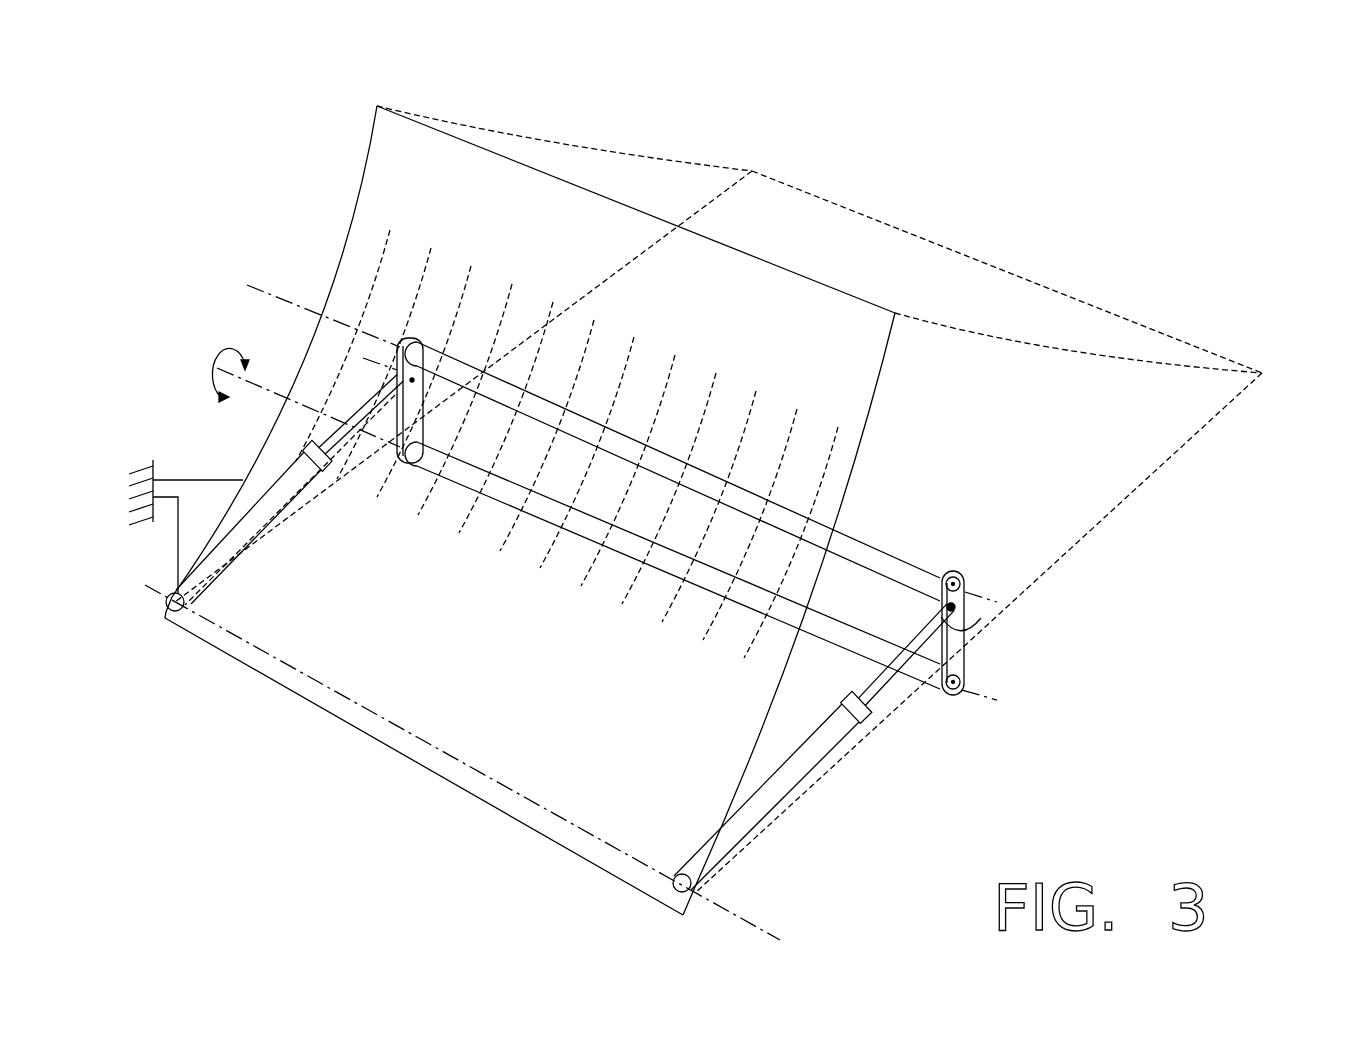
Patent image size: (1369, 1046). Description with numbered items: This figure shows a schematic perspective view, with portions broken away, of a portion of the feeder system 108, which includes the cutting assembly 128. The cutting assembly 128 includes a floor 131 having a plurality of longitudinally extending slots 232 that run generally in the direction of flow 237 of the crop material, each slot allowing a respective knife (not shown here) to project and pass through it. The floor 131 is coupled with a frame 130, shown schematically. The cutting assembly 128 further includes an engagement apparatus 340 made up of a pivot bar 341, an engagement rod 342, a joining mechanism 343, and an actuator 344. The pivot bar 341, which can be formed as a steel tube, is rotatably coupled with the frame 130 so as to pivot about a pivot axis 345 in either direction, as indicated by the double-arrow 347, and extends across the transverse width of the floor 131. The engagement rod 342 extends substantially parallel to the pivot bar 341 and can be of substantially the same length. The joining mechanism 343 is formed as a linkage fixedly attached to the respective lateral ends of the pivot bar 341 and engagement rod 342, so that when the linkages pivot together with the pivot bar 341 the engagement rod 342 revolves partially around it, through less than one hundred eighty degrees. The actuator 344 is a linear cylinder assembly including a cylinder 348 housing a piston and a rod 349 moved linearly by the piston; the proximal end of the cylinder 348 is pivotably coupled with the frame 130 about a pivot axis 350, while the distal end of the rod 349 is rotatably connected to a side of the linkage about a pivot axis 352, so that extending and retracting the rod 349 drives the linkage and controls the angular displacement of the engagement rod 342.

The feeder system 108 is at (1056, 138).
The cutting assembly 128 is at (1257, 326).
The floor 131 is at (363, 177).
The slots 232 is at (380, 270).
The frame 130 is at (152, 461).
The direction of flow 237 is at (358, 782).
The engagement apparatus 340 is at (781, 573).
The pivot bar 341 is at (913, 680).
The engagement rod 342 is at (938, 564).
The joining mechanism 343 is at (957, 652).
The actuator 344 is at (597, 632).
The pivot axis 345 is at (259, 390).
The double-arrow 347 is at (216, 365).
The cylinder 348 is at (828, 755).
The rod 349 is at (876, 695).
The pivot axis 350 is at (752, 920).
The pivot axis 352 is at (947, 613).